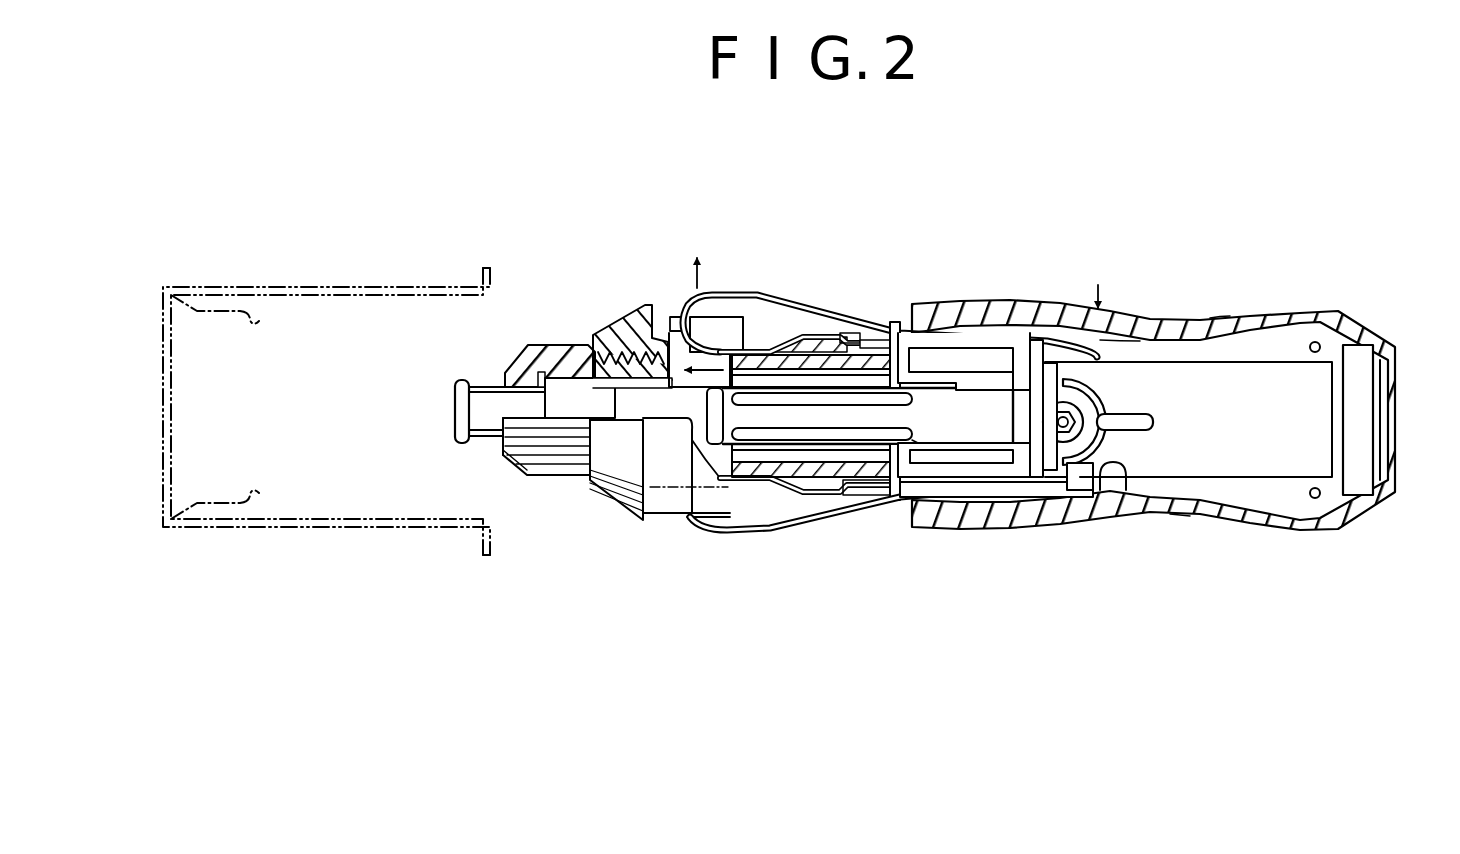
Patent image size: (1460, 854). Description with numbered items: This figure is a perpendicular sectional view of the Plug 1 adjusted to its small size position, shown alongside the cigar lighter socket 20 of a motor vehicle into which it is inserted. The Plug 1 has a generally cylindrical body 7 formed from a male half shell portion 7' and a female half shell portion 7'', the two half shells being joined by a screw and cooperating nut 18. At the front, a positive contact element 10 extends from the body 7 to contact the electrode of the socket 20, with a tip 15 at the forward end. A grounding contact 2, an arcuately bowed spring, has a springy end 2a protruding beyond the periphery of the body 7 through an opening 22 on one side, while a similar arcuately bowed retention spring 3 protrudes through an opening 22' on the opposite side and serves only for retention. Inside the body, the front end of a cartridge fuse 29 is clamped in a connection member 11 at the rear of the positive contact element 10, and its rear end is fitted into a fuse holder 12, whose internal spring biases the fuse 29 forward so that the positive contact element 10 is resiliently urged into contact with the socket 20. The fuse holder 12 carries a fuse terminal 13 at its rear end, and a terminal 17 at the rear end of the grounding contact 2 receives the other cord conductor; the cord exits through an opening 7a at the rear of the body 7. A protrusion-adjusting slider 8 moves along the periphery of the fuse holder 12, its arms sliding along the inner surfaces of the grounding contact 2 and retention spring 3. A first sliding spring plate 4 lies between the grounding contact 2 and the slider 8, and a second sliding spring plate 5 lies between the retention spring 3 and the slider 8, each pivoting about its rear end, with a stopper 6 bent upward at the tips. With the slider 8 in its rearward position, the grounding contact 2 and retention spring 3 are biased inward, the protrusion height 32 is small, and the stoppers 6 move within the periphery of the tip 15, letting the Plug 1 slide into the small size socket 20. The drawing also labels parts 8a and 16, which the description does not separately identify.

The Plug 1 is at (1270, 298).
The grounding contact 2 is at (750, 338).
The springy end 2a is at (696, 316).
The retention spring 3 is at (765, 535).
The first sliding spring plate 4 is at (873, 337).
The second sliding spring plate 5 is at (845, 525).
The stopper 6 is at (720, 330).
The cylindrical body 7 is at (1153, 389).
The male half shell portion 7' is at (1228, 284).
The female half shell portion 7'' is at (1194, 549).
The opening 7a is at (1385, 385).
The protrusion-adjusting slider 8 is at (900, 345).
The spring arm 8a is at (845, 334).
The positive contact element 10 is at (455, 432).
The connection member 11 is at (565, 360).
The fuse holder 12 is at (955, 462).
The fuse terminal 13 is at (1126, 482).
The tip 15 is at (605, 504).
The threaded sleeve 16 is at (552, 478).
The terminal 17 is at (1120, 342).
The nut 18 is at (1063, 450).
The cigar lighter socket 20 is at (392, 528).
The opening 22 is at (805, 296).
The opening 22' is at (805, 537).
The cartridge fuse 29 is at (692, 440).
The protrusion height 32 is at (1100, 296).